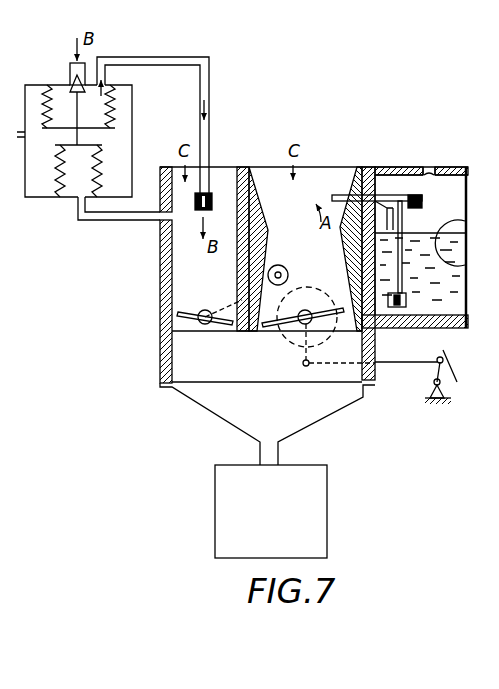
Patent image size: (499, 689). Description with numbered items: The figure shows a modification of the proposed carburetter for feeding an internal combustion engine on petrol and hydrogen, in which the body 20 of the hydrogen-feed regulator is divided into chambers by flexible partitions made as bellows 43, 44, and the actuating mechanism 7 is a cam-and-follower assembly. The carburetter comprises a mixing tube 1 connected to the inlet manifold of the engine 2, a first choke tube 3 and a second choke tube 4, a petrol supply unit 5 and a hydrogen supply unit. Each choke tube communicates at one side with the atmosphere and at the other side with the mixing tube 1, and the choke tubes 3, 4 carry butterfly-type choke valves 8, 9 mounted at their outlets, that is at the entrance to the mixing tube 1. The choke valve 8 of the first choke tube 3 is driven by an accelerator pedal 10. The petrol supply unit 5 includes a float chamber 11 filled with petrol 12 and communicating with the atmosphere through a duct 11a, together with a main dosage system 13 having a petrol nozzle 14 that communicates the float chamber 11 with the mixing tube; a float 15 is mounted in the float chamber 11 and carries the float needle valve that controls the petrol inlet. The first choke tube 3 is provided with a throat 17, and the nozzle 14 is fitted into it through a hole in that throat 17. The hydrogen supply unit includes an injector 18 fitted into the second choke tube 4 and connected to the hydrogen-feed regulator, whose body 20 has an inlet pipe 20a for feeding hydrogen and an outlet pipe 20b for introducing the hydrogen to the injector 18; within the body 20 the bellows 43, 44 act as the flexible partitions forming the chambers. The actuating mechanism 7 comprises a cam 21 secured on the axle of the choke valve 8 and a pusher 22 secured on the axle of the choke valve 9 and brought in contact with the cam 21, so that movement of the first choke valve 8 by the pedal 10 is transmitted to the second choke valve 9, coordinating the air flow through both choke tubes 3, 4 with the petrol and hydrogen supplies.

The mixing tube 1 is at (376, 373).
The engine 2 is at (271, 511).
The first choke tube 3 is at (343, 164).
The second choke tube 4 is at (228, 165).
The petrol supply unit 5 is at (406, 164).
The actuating mechanism 7 is at (20, 84).
The choke valve 8 is at (350, 307).
The choke valve 9 is at (190, 311).
The accelerator pedal 10 is at (457, 376).
The float chamber 11 is at (460, 328).
The duct 11a is at (433, 167).
The petrol 12 is at (418, 312).
The main dosage system 13 is at (405, 232).
The petrol nozzle 14 is at (340, 195).
The float chamber 15 is at (462, 223).
The throat 17 is at (268, 222).
The injector 18 is at (200, 215).
The body 20 is at (132, 137).
The inlet pipe 20a is at (72, 70).
The outlet pipe 20b is at (115, 57).
The cam 21 is at (307, 290).
The pusher 22 is at (282, 266).
The bellows 43 is at (113, 92).
The bellows 44 is at (100, 166).